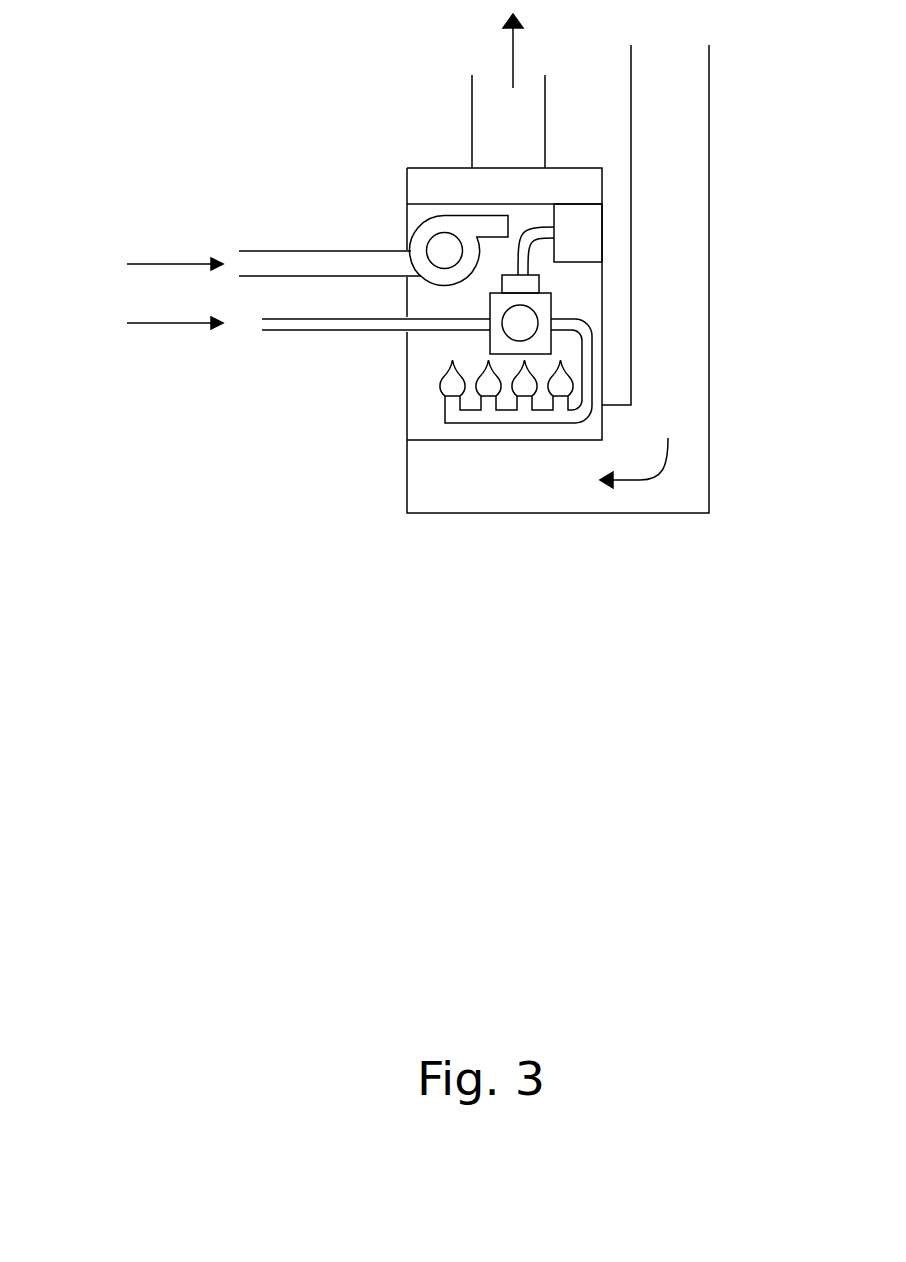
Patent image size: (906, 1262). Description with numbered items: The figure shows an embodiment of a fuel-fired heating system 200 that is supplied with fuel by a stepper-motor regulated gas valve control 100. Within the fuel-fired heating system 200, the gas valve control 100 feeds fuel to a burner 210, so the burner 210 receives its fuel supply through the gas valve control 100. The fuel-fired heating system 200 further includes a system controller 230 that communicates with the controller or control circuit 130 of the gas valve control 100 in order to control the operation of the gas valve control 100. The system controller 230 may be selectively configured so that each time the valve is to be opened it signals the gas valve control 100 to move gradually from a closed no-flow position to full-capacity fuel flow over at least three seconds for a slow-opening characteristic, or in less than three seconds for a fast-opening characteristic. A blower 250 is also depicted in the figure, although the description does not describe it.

The stepper-motor regulated gas valve control 100 is at (543, 306).
The control circuit 130 is at (542, 284).
The fuel-fired heating system 200 is at (627, 672).
The burner 210 is at (568, 423).
The system controller 230 is at (586, 237).
The blower 250 is at (443, 250).